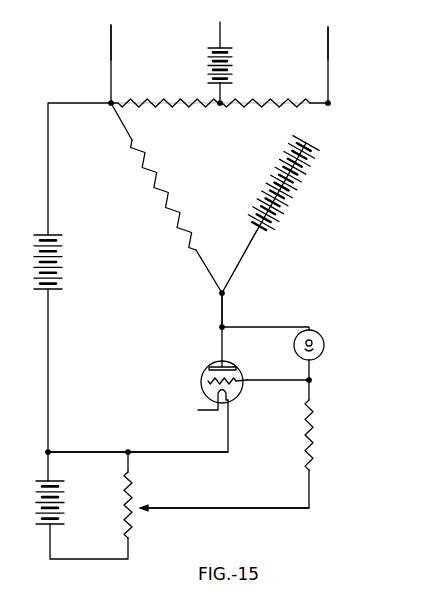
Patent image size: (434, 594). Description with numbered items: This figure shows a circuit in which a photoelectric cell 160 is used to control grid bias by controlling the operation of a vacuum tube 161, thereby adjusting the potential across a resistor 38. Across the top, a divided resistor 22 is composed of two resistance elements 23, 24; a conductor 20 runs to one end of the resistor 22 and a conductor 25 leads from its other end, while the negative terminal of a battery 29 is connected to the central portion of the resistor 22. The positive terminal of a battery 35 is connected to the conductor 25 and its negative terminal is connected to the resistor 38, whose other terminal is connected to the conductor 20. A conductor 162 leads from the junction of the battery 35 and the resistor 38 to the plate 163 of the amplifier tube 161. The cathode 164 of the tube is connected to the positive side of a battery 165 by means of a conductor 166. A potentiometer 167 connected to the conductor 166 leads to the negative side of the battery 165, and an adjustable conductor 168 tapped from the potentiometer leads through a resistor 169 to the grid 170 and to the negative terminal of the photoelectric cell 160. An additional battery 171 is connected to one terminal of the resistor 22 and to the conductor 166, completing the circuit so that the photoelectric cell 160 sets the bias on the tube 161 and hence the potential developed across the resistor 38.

The conductor 20 is at (112, 38).
The divided resistor 22 is at (214, 114).
The resistance element 23 is at (160, 99).
The resistance element 24 is at (278, 97).
The conductor 25 is at (329, 46).
The battery 29 is at (222, 45).
The battery 35 is at (262, 192).
The resistor 38 is at (176, 198).
The photoelectric cell 160 is at (322, 338).
The vacuum tube 161 is at (204, 368).
The conductor 162 is at (220, 303).
The plate 163 is at (232, 365).
The cathode 164 is at (230, 398).
The battery 165 is at (42, 522).
The conductor 166 is at (92, 451).
The potentiometer 167 is at (132, 500).
The adjustable conductor 168 is at (254, 508).
The resistor 169 is at (312, 436).
The grid 170 is at (208, 381).
The battery 171 is at (60, 263).